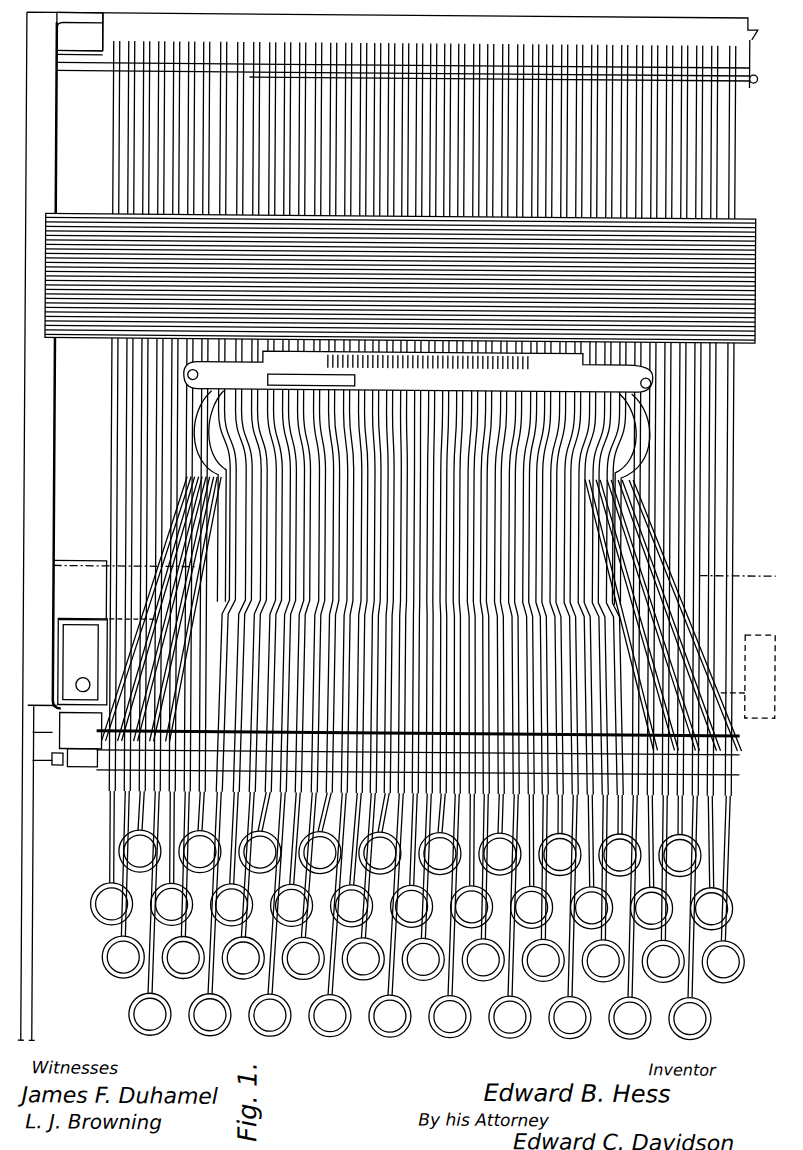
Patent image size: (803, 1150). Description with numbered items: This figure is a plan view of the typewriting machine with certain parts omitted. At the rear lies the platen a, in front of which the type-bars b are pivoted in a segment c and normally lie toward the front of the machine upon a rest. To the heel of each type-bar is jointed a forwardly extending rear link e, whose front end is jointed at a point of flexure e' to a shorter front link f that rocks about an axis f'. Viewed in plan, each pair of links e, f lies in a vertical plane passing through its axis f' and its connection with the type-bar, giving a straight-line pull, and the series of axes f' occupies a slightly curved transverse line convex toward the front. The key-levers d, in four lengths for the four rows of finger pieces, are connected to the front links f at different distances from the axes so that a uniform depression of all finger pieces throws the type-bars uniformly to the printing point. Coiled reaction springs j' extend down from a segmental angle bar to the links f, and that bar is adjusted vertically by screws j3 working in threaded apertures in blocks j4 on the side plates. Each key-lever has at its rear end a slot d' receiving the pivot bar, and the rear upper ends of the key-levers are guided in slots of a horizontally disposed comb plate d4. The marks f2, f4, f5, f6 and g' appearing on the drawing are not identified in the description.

The platen a is at (745, 214).
The type-bars b is at (645, 435).
The segment c is at (418, 371).
The key-levers d is at (438, 418).
The key-way or slot d' is at (94, 826).
The comb plate d4 is at (80, 31).
The link e is at (429, 613).
The joint or point of flexure e' is at (82, 606).
The front link f is at (76, 719).
The axis f' is at (759, 804).
The key lever link f2 is at (90, 740).
The key lever guide f4 is at (752, 711).
The key lever spring f5 is at (763, 738).
The key lever stop f6 is at (766, 766).
The bar support g' is at (756, 613).
The coiled springs j' is at (71, 756).
The screws j3 is at (100, 675).
The blocks j4 is at (70, 608).